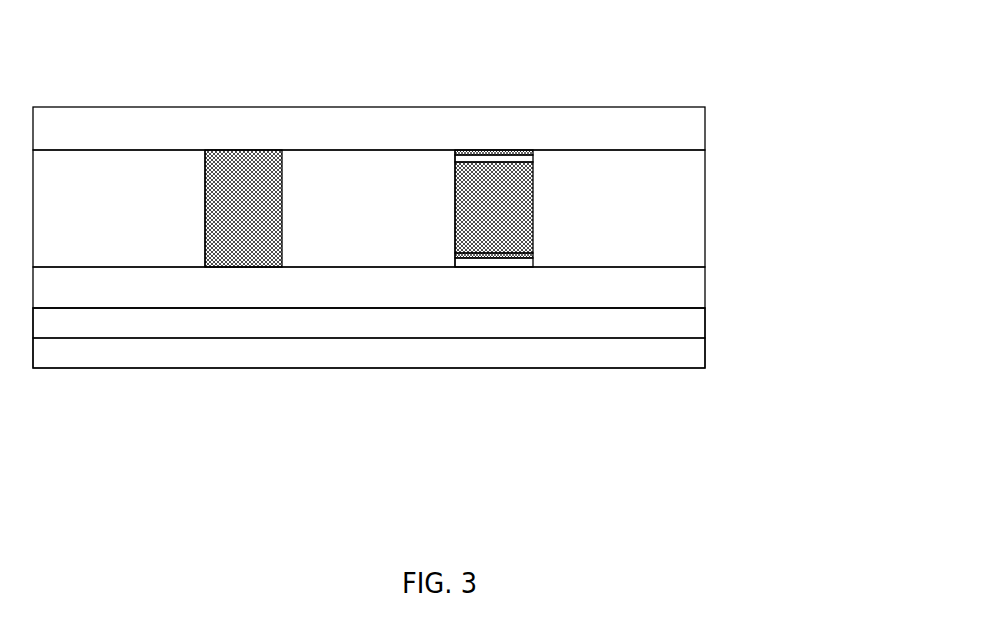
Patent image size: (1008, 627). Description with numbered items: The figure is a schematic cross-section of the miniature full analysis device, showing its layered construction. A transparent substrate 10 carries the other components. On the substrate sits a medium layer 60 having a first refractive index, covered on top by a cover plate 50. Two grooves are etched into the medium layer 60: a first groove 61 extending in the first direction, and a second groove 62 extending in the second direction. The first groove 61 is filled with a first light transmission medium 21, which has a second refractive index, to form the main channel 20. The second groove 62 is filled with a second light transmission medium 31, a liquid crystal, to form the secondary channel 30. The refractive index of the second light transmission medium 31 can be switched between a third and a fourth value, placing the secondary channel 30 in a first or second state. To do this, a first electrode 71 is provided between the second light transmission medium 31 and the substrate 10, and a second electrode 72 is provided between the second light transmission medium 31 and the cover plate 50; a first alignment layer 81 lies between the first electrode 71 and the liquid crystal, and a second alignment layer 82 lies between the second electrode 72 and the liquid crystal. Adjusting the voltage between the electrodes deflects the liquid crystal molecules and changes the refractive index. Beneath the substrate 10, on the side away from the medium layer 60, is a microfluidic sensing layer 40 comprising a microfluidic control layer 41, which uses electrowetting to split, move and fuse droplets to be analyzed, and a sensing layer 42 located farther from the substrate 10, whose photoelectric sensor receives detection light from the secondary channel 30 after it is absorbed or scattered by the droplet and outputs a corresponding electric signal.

The substrate 10 is at (705, 285).
The main channel 20 is at (237, 152).
The first light transmission medium 21 is at (243, 207).
The secondary channel 30 is at (466, 144).
The second light transmission medium 31 is at (495, 207).
The microfluidic sensing layer 40 is at (463, 361).
The microfluidic control layer 41 is at (705, 322).
The sensing layer 42 is at (705, 352).
The cover plate 50 is at (705, 128).
The medium layer 60 is at (705, 207).
The first groove 61 is at (205, 207).
The second groove 62 is at (455, 207).
The first electrode 71 is at (493, 267).
The second electrode 72 is at (492, 150).
The first alignment layer 81 is at (533, 262).
The second alignment layer 82 is at (533, 157).